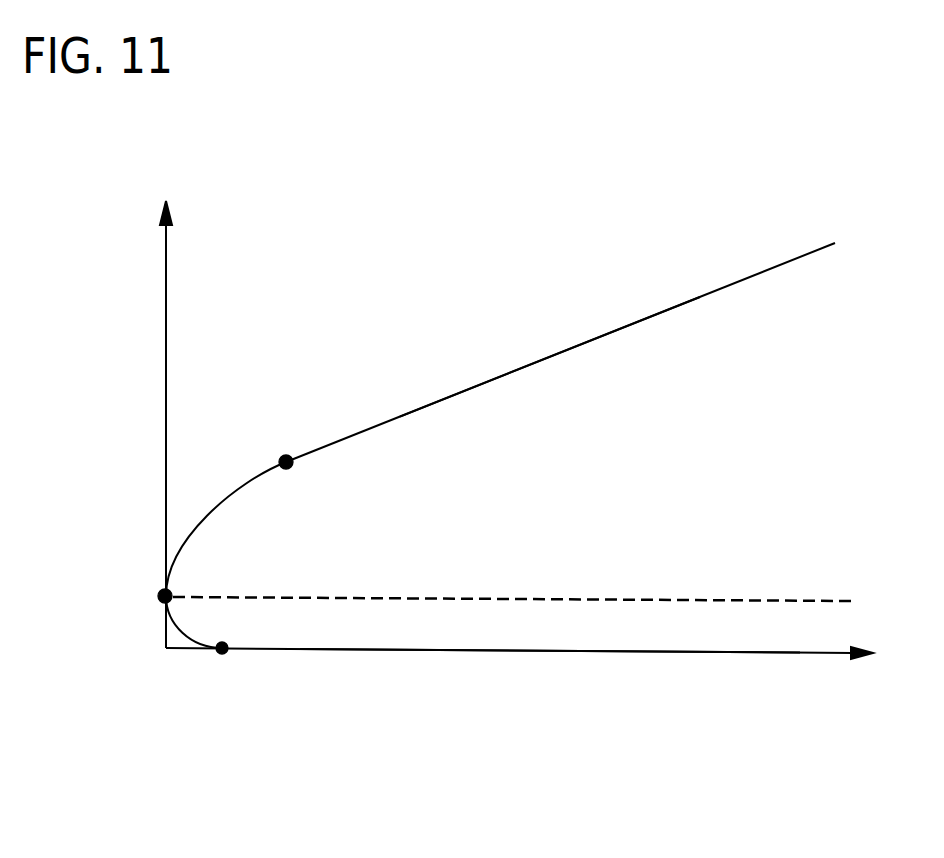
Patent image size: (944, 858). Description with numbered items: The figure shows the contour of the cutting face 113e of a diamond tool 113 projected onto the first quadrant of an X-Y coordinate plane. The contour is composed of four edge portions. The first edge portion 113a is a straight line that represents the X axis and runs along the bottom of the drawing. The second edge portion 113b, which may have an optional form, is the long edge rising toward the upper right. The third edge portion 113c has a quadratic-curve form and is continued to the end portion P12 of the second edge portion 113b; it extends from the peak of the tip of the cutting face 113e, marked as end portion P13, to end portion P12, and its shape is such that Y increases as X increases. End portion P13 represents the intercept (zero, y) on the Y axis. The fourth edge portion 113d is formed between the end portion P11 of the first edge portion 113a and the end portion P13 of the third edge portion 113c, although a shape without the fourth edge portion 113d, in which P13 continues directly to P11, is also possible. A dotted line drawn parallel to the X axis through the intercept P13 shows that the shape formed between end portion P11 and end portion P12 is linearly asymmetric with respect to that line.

The diamond tool 113 is at (709, 283).
The first edge portion 113a is at (593, 654).
The second edge portion 113b is at (578, 343).
The third edge portion 113c is at (228, 496).
The fourth edge portion 113d is at (185, 636).
The cutting face 113e is at (588, 492).
The end portion of the first edge portion P11 is at (224, 655).
The end portion of the second edge portion P12 is at (284, 452).
The end portion of the third edge portion P13 is at (158, 595).